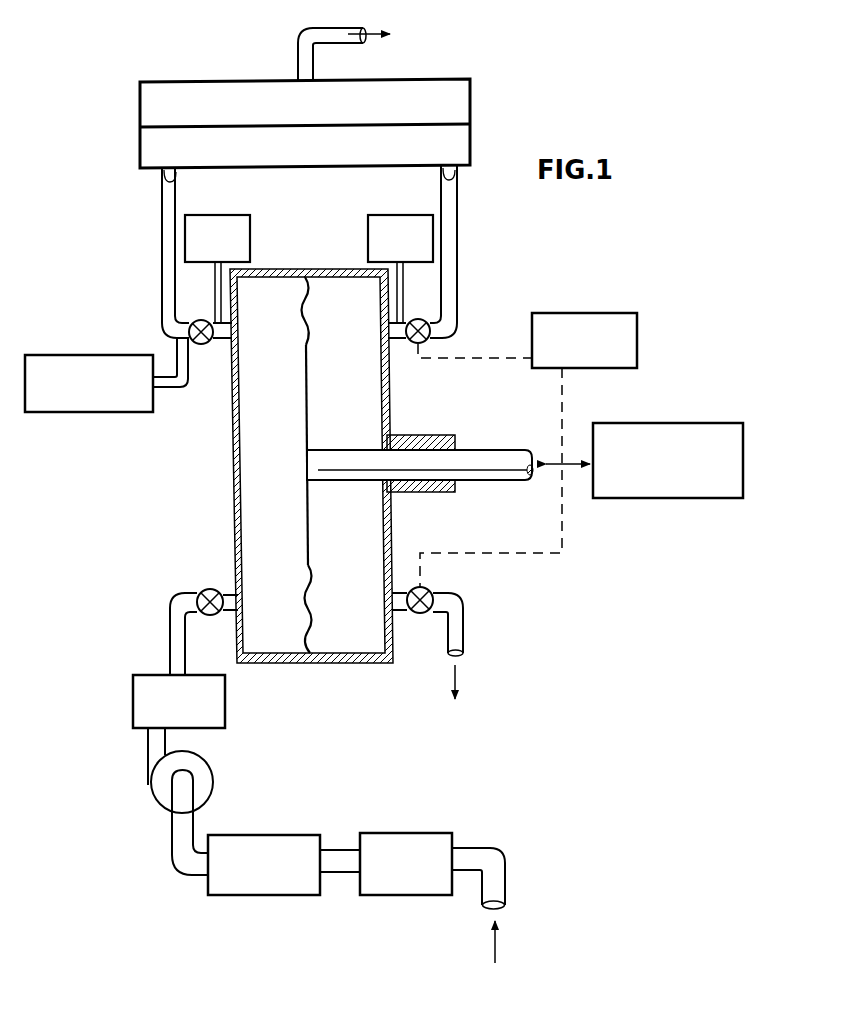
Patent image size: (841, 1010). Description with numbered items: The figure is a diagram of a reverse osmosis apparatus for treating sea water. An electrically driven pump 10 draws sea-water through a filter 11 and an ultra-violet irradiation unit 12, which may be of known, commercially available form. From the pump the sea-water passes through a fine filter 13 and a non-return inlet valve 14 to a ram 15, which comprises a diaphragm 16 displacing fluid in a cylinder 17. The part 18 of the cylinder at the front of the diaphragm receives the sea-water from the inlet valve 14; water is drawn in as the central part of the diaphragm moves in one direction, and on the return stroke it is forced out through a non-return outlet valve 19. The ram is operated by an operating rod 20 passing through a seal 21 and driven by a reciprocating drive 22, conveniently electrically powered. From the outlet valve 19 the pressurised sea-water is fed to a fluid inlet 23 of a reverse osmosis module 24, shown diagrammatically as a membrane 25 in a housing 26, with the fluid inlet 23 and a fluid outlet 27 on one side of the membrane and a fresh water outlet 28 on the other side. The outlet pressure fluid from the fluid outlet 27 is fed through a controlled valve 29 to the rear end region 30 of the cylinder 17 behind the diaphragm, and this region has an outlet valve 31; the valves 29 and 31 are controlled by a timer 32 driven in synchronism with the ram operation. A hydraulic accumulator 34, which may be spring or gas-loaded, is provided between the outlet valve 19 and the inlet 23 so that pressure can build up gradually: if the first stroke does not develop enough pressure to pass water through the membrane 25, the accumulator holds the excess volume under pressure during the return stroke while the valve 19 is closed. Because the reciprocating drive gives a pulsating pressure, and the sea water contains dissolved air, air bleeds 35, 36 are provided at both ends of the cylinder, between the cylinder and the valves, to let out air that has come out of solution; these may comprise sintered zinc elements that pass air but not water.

The pump 10 is at (212, 772).
The filter 11 is at (433, 835).
The ultra-violet irradiation unit 12 is at (296, 845).
The fine filter 13 is at (228, 708).
The non-return inlet valve 14 is at (210, 589).
The ram 15 is at (222, 420).
The diaphragm 16 is at (298, 425).
The cylinder 17 is at (297, 271).
The part of the cylinder at the front of the diaphragm 18 is at (278, 507).
The non-return outlet valve 19 is at (200, 320).
The operating rod 20 is at (502, 453).
The seal 21 is at (420, 493).
The reciprocating drive 22 is at (698, 425).
The fluid inlet 23 is at (175, 183).
The reverse osmosis module 24 is at (490, 126).
The membrane 25 is at (454, 122).
The housing 26 is at (229, 88).
The fluid outlet 27 is at (455, 183).
The fresh water outlet 28 is at (300, 62).
The controlled valve 29 is at (420, 319).
The rear end region 30 is at (372, 407).
The outlet valve 31 is at (433, 597).
The timer 32 is at (598, 313).
The hydraulic accumulator 34 is at (118, 355).
The air bleed 35 is at (244, 223).
The air bleed 36 is at (368, 222).